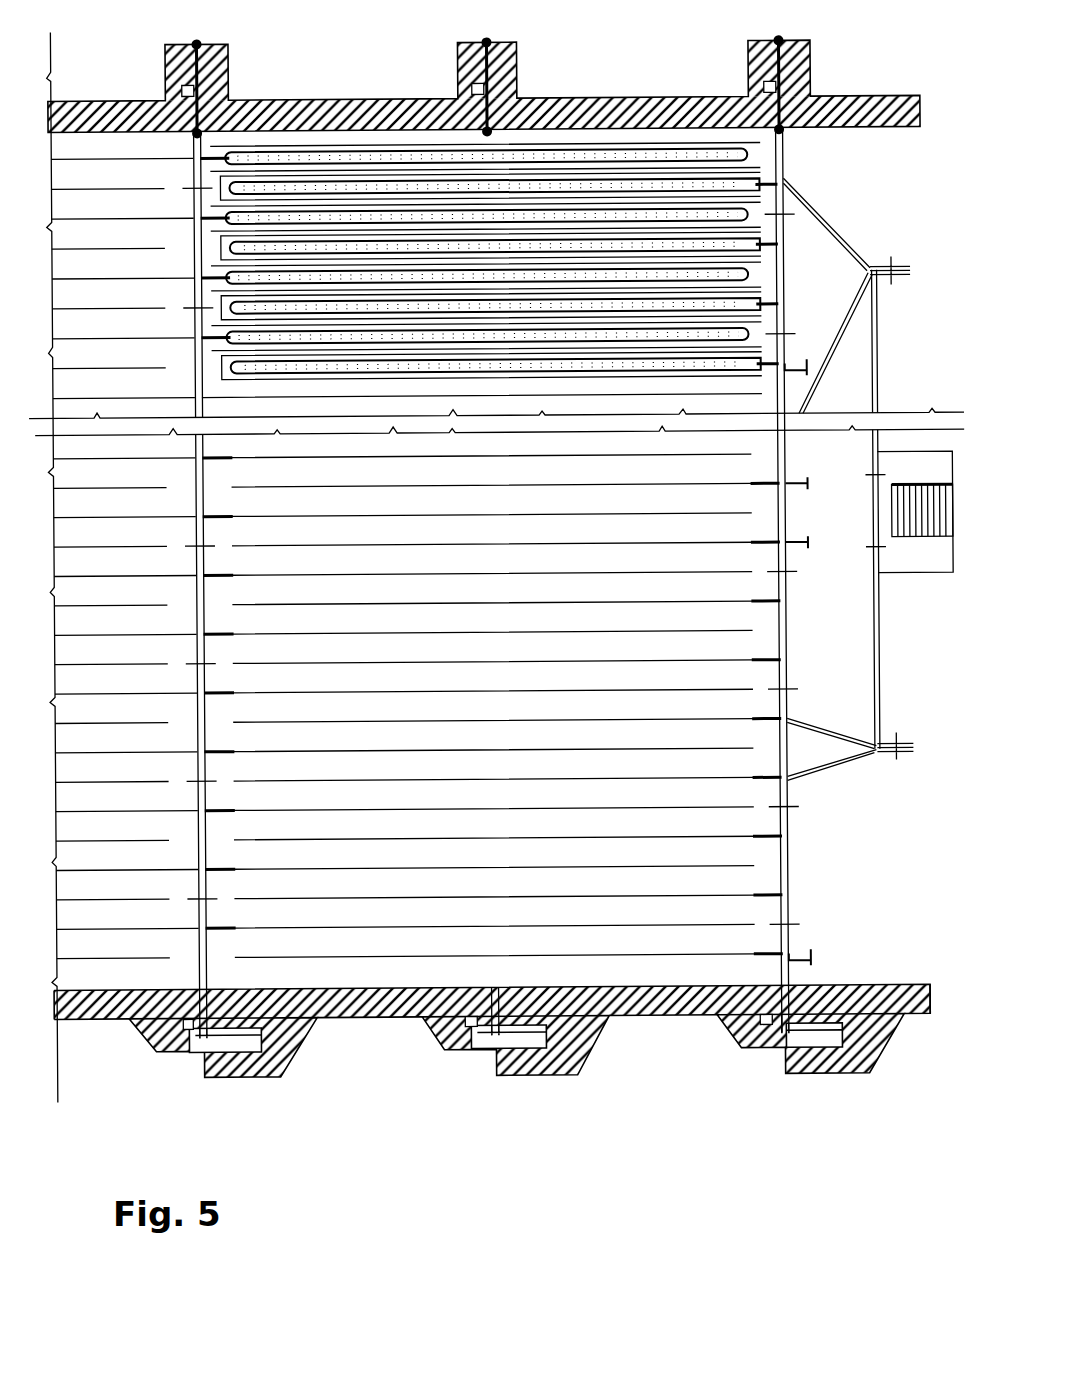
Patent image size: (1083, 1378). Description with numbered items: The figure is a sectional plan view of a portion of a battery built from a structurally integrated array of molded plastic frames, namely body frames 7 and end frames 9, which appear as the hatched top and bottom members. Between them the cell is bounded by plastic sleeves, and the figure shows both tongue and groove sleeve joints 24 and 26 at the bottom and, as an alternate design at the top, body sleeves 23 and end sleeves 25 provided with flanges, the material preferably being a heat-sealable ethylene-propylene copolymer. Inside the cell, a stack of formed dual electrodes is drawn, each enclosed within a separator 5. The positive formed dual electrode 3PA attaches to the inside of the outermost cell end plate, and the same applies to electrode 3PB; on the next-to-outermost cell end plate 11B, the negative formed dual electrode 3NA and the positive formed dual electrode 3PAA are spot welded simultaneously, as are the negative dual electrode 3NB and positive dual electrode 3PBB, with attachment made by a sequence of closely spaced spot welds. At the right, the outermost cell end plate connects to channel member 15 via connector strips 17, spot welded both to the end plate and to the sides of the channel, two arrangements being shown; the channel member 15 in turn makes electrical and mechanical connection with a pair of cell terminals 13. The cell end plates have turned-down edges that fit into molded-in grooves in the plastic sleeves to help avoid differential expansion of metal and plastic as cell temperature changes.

The body sleeve 23 is at (167, 78).
The end sleeve 25 is at (230, 78).
The separator 5 is at (612, 148).
The cell end plate 11B is at (195, 152).
The negative formed dual electrode 3NA is at (197, 180).
The negative formed dual electrode 3NB is at (200, 260).
The positive formed dual electrode 3PAA is at (130, 165).
The positive formed dual electrode 3PBB is at (142, 282).
The positive formed dual electrode 3PA is at (788, 182).
The positive formed dual electrode 3PB is at (780, 303).
The connector strip 17 is at (848, 246).
The channel member 15 is at (880, 320).
The cell terminals 13 is at (936, 578).
The body frame 7 is at (128, 1022).
The end frame 9 is at (922, 1019).
The tongue and groove sleeve joint 24 is at (172, 1057).
The tongue and groove sleeve joint 26 is at (283, 1077).